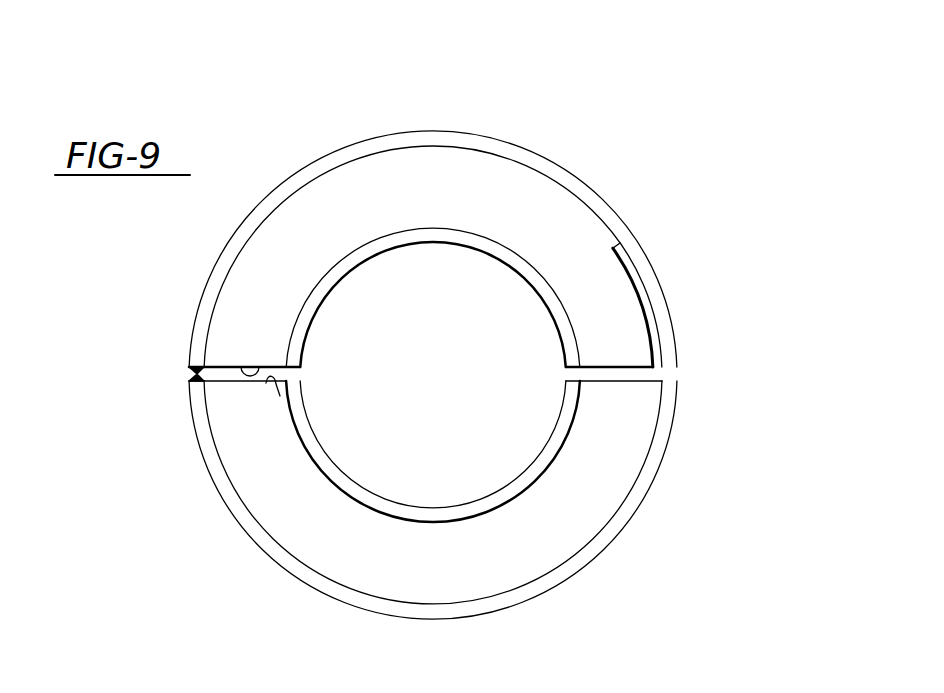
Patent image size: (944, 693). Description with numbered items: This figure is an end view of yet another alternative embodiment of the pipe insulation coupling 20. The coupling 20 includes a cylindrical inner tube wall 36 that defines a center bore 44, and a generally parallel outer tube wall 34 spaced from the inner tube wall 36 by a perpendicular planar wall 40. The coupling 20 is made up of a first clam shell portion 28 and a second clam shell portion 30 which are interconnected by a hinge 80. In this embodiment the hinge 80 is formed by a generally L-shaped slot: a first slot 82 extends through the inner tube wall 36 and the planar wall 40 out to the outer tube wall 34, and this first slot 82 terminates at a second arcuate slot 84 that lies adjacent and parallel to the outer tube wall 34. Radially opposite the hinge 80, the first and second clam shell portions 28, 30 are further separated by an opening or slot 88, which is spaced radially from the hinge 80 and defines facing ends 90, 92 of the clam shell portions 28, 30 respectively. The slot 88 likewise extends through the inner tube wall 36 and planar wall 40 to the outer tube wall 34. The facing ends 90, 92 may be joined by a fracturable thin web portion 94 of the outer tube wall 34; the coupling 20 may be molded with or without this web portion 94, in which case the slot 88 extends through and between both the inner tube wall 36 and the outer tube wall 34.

The pipe insulation coupling 20 is at (716, 104).
The first clam shell portion 28 is at (599, 196).
The second clam shell portion 30 is at (356, 608).
The outer tube wall 34 is at (330, 153).
The inner tube wall 36 is at (394, 250).
The planar wall 40 is at (447, 201).
The center bore 44 is at (418, 508).
The hinge 80 is at (677, 352).
The first slot 82 is at (606, 380).
The second arcuate slot 84 is at (636, 301).
The opening or slot 88 is at (300, 372).
The facing end 90 is at (243, 366).
The facing end 92 is at (274, 381).
The fracturable thin web portion 94 is at (193, 373).